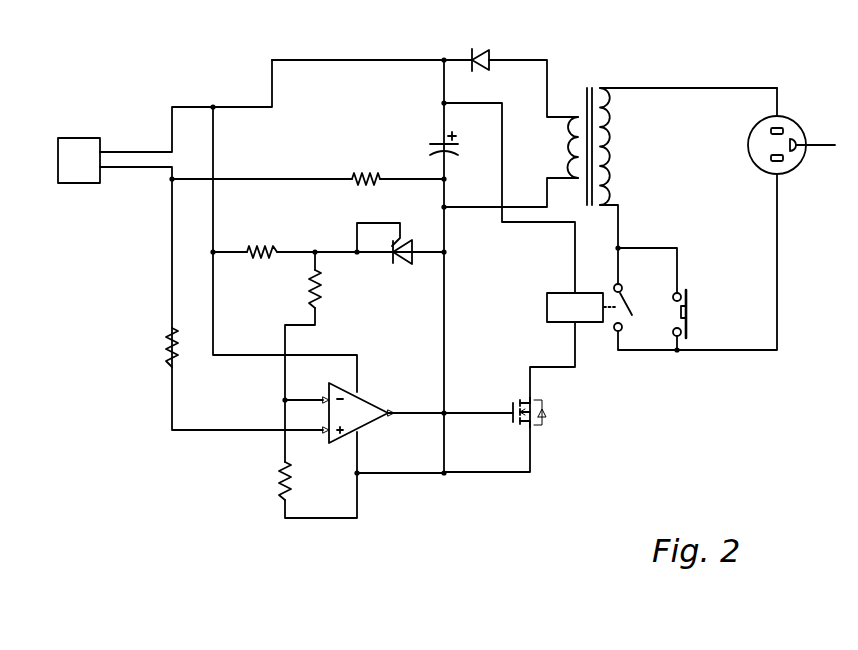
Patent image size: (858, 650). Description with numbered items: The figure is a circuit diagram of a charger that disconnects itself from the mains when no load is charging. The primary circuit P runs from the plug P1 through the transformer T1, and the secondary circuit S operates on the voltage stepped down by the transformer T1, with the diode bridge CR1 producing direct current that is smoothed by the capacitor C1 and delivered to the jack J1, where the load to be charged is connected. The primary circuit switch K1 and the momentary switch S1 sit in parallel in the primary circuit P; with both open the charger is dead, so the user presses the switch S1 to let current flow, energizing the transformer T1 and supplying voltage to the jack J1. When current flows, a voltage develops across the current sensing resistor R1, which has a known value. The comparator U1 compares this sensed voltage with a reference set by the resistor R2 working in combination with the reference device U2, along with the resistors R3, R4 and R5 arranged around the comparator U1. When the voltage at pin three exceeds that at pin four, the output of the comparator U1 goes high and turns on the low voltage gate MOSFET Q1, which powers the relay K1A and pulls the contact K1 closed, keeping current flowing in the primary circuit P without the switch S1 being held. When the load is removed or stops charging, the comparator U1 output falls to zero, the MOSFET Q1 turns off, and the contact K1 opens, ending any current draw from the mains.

The secondary circuit S is at (344, 60).
The primary circuit P is at (670, 86).
The jack J1 is at (76, 149).
The diode bridge CR1 is at (470, 51).
The filter capacitor C1 is at (453, 142).
The current sensing resistor R1 is at (360, 179).
The resistor R2 is at (260, 253).
The resistor R3 10.0K R3 is at (154, 347).
The resistor R4 1.8K R4 is at (333, 288).
The resistor R5 620 R5 is at (302, 479).
The voltage comparator U1 is at (375, 401).
The component working with R2 U2 is at (394, 261).
The low voltage gate mosfet semiconductor Q1 is at (575, 412).
The relay K1A is at (575, 307).
The primary circuit switch K1 is at (627, 307).
The momentary switch S1 is at (704, 314).
The transformer T1 is at (589, 137).
The receptacle P1 is at (784, 138).